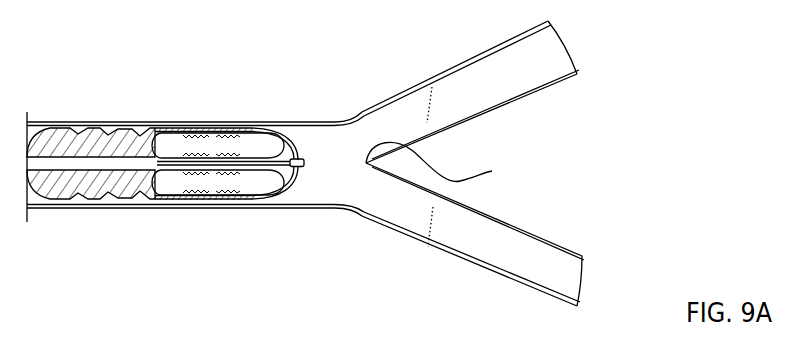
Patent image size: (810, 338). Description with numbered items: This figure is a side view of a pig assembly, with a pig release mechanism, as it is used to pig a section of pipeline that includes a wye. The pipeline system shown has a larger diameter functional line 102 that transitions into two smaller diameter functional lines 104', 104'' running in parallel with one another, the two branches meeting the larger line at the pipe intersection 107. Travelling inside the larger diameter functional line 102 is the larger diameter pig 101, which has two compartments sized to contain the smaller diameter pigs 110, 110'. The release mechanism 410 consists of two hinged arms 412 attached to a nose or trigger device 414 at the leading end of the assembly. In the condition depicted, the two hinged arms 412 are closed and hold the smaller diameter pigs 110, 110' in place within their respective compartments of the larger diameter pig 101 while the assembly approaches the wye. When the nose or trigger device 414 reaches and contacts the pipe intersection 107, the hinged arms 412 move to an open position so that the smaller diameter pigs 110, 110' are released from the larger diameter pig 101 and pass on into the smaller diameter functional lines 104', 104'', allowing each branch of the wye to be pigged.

The larger diameter pig body 101 is at (72, 145).
The larger diameter functional line 102 is at (45, 204).
The smaller diameter functional line 104' is at (475, 236).
The smaller diameter functional line 104'' is at (472, 92).
The pipe intersection 107 is at (436, 161).
The smaller diameter pig 110 is at (218, 204).
The smaller diameter pig 110' is at (218, 123).
The release mechanism 410 is at (312, 153).
The hinged arms 412 is at (290, 150).
The nose or trigger device 414 is at (352, 206).